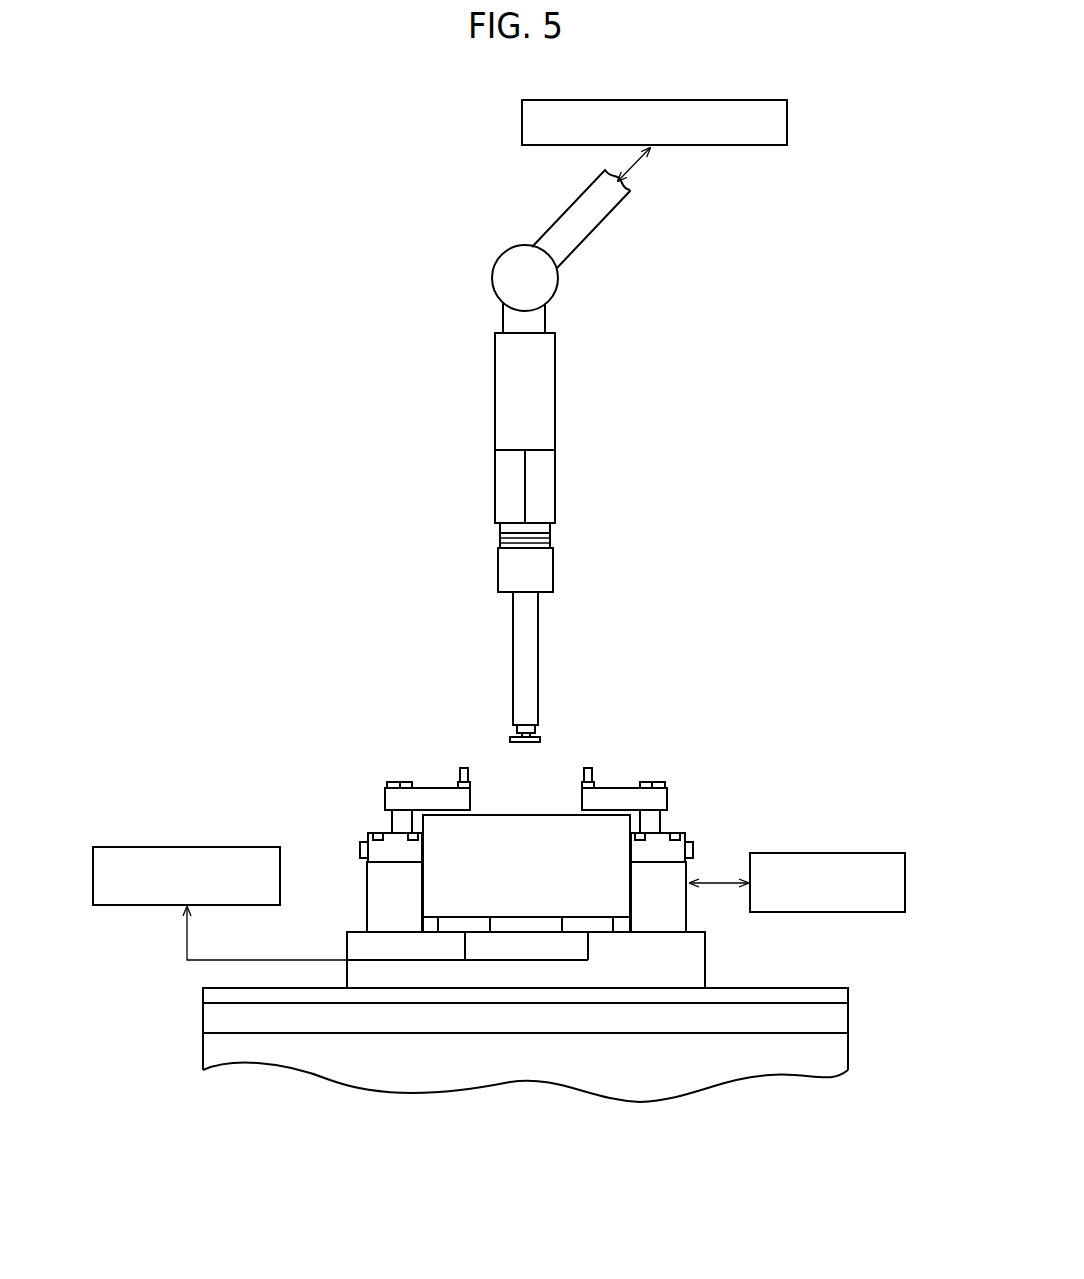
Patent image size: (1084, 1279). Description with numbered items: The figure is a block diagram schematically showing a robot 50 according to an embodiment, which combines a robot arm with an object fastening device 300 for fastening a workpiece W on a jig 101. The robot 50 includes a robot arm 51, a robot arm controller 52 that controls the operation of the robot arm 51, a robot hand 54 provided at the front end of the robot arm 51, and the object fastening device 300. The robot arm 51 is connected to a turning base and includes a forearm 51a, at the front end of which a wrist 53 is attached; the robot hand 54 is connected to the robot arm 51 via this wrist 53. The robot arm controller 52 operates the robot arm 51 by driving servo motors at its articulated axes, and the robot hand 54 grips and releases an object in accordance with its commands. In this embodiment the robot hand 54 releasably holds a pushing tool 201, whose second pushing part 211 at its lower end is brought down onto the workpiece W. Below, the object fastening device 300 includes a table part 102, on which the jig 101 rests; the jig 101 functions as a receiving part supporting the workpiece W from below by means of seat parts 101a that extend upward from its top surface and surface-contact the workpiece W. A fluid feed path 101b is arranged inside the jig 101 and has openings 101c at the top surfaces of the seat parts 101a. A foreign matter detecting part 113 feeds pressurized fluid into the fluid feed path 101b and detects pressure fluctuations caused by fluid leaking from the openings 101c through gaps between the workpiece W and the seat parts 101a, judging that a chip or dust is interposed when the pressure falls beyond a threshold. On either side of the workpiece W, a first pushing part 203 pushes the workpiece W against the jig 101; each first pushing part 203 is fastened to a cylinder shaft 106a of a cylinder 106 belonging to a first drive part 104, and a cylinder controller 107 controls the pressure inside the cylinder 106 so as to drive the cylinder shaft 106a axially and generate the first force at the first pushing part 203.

The robot 50 is at (889, 119).
The robot arm 51 is at (529, 251).
The forearm 51a is at (565, 228).
The robot arm controller 52 is at (522, 122).
The wrist 53 is at (508, 276).
The robot hand 54 is at (490, 427).
The pushing tool 201 is at (558, 570).
The second pushing part 211 is at (550, 733).
The object fastening device 300 is at (754, 496).
The first pushing part 203 is at (437, 798).
The first drive part 104 is at (591, 816).
The cylinder 106 is at (365, 892).
The cylinder shaft 106a is at (393, 822).
The cylinder controller 107 is at (820, 853).
The foreign matter detecting part 113 is at (150, 847).
The jig 101 is at (555, 909).
The seat parts 101a is at (480, 925).
The fluid feed path 101b is at (375, 957).
The openings 101c is at (472, 928).
The table part 102 is at (470, 1068).
The workpiece W is at (533, 822).